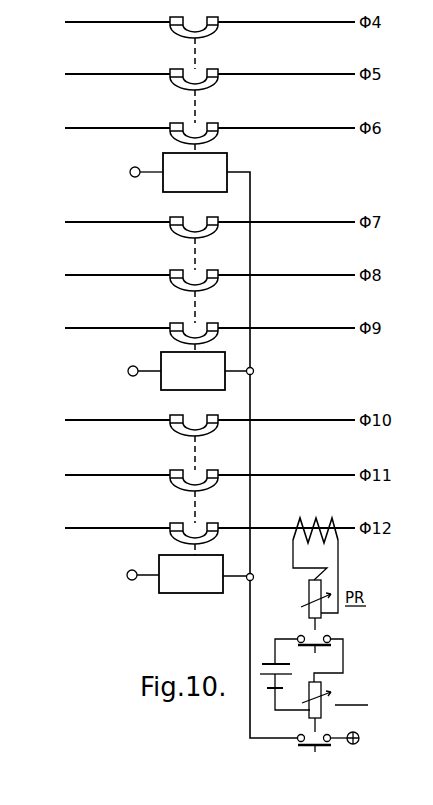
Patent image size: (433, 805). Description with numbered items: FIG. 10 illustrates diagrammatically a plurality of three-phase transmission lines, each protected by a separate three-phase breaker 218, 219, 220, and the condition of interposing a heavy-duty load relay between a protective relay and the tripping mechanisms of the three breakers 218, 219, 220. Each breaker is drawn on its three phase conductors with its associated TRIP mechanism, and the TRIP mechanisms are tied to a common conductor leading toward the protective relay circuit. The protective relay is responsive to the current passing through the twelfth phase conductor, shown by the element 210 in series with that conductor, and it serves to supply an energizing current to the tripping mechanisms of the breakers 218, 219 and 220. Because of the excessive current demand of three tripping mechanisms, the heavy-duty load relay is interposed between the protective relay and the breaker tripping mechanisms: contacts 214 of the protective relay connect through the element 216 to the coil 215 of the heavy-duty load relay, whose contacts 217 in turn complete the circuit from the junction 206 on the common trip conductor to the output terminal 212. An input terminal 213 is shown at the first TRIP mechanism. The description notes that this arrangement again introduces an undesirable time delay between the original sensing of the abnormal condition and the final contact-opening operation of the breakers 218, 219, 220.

The trip input terminal 213 is at (130, 169).
The three-phase breaker 218 is at (228, 162).
The three-phase breaker 219 is at (168, 352).
The three-phase breaker 220 is at (168, 555).
The resistor 210 is at (300, 522).
The junction conductor 206 is at (307, 594).
The relay contacts 214 is at (300, 635).
The capacitor 216 is at (290, 673).
The relay coil LR2 215 is at (327, 680).
The relay contacts 217 is at (299, 735).
The output terminal 212 is at (362, 737).